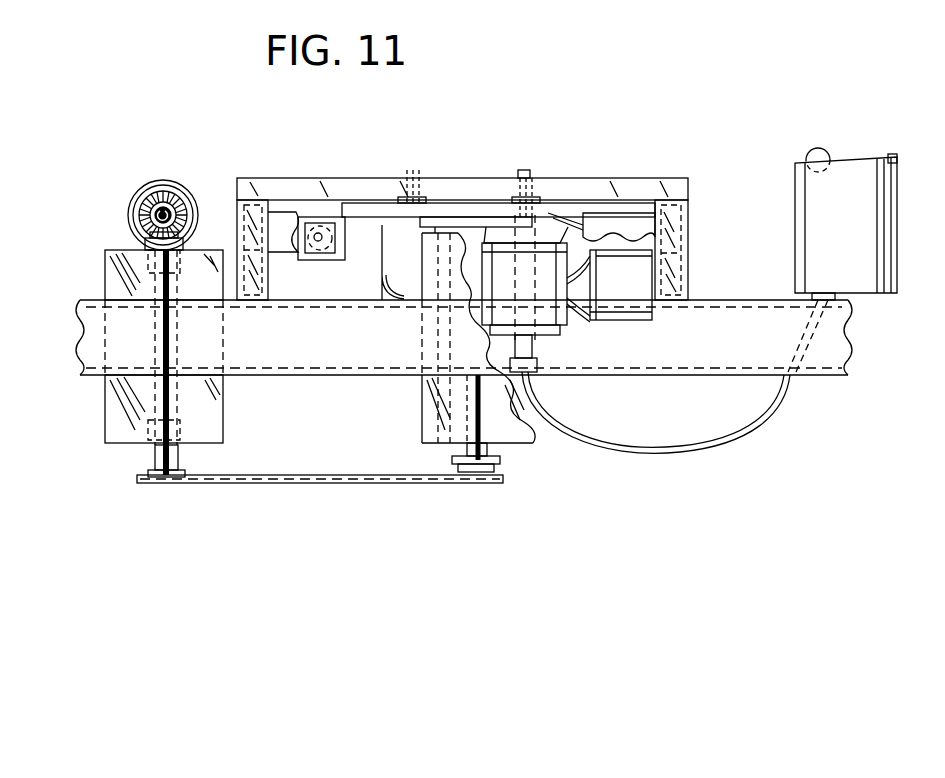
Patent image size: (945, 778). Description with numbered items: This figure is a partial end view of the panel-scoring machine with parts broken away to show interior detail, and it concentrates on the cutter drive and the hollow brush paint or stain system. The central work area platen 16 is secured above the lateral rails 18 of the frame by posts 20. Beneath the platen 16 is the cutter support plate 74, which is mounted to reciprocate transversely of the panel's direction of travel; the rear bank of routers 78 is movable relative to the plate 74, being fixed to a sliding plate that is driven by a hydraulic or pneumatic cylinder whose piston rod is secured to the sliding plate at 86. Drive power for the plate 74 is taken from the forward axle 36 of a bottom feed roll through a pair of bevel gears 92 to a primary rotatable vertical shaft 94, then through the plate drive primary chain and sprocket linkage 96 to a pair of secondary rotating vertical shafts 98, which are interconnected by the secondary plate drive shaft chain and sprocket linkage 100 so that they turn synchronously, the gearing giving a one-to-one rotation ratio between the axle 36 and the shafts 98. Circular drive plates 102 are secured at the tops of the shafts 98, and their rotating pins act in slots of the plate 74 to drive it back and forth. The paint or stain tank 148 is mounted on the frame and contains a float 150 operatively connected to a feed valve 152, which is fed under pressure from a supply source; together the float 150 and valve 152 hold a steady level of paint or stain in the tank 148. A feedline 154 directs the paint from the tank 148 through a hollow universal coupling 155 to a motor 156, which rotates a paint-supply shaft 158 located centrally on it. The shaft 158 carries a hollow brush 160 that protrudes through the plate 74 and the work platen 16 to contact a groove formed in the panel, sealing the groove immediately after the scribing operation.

The central work area platen 16 is at (344, 190).
The lateral rails 18 is at (343, 358).
The posts 20 is at (673, 283).
The axle 36 is at (192, 192).
The cutter support plate 74 is at (548, 212).
The rear bank of routers 78 is at (403, 276).
The piston rod attachment point 86 is at (330, 258).
The bevel gears 92 is at (142, 224).
The primary rotatable vertical shaft 94 is at (178, 458).
The plate drive primary chain and sprocket linkage 96 is at (310, 480).
The secondary rotating vertical shafts 98 is at (465, 448).
The secondary plate drive shaft chain and sprocket linkage 100 is at (497, 465).
The circular drive plates 102 is at (449, 217).
The paint or stain tank 148 is at (866, 240).
The float 150 is at (822, 148).
The feed valve 152 is at (910, 139).
The feedline 154 is at (727, 422).
The hollow universal coupling 155 is at (540, 367).
The motor 156 is at (612, 298).
The paint-supply shaft 158 is at (478, 335).
The hollow brush 160 is at (522, 170).